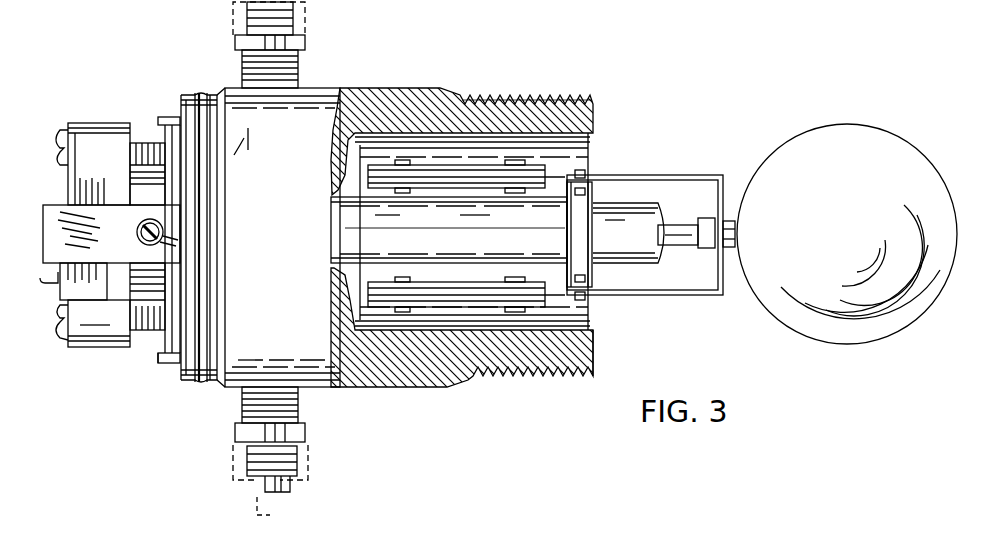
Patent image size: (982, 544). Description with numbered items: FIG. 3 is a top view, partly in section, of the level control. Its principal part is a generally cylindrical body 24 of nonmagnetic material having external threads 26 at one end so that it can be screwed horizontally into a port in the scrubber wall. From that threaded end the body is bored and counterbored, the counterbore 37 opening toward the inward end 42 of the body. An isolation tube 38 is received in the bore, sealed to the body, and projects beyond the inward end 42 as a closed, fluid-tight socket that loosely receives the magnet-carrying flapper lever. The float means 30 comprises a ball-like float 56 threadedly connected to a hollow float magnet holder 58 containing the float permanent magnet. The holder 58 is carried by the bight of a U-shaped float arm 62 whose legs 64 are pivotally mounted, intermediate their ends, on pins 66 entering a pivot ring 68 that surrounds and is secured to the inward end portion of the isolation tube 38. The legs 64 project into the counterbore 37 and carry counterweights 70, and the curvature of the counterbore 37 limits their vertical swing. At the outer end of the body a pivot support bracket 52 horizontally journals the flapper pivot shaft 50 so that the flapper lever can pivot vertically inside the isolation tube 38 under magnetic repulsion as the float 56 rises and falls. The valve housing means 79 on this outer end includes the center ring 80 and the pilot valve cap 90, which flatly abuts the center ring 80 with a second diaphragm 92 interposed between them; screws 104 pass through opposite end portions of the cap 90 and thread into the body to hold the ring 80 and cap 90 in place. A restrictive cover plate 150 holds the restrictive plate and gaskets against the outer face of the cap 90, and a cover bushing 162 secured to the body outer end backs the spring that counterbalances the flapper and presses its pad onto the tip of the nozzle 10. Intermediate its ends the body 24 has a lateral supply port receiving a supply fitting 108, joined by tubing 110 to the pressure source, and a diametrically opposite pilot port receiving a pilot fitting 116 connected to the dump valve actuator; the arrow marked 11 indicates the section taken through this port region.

The nozzle 10 is at (277, 497).
The section line for FIG. 11 is at (203, 392).
The cylindrical body 24 is at (392, 97).
The external threads 26 is at (530, 99).
The float means 30 is at (721, 148).
The counterbore 37 is at (591, 341).
The isolation tube 38 is at (398, 250).
The inward end 42 is at (596, 123).
The flapper pivot shaft 50 is at (172, 290).
The pivot support bracket 52 is at (168, 117).
The ball-like float 56 is at (832, 199).
The float magnet holder 58 is at (708, 218).
The U-shaped float arm 62 is at (700, 176).
The float arm legs 64 is at (655, 176).
The pins 66 is at (583, 170).
The pivot ring 68 is at (567, 232).
The counterweights 70 is at (452, 285).
The valve housing means 79 is at (136, 348).
The center ring 80 is at (143, 200).
The pilot valve cap 90 is at (118, 122).
The second diaphragm 92 is at (124, 197).
The screws 104 is at (58, 140).
The supply fitting 108 is at (305, 432).
The tubing 110 is at (256, 486).
The pilot fitting 116 is at (235, 38).
The restrictive cover plate 150 is at (58, 278).
The cover bushing 162 is at (118, 259).